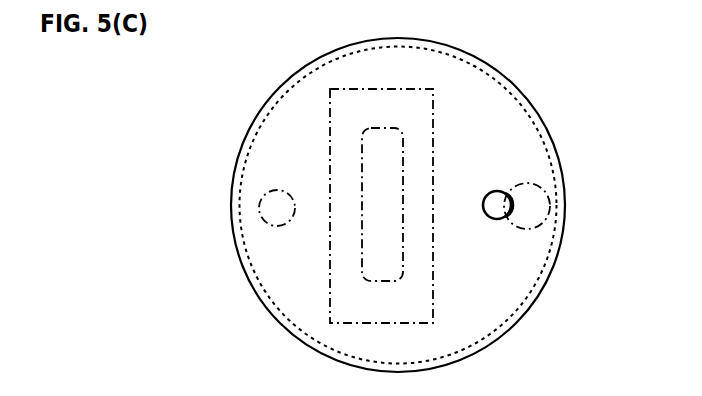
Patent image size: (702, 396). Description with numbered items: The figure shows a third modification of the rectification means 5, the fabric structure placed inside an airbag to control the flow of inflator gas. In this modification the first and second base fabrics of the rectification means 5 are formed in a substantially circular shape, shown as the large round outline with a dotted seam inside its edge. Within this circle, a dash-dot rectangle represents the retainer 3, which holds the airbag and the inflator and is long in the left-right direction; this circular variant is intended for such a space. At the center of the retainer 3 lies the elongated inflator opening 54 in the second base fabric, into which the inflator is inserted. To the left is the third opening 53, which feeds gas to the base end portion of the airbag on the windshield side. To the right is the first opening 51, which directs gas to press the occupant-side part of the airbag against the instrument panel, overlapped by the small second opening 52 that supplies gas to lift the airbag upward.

The rectification means 5 is at (556, 108).
The retainer 3 is at (433, 272).
The inflator opening 54 is at (384, 128).
The third opening 53 is at (285, 190).
The first opening 51 is at (526, 183).
The second opening 52 is at (484, 196).